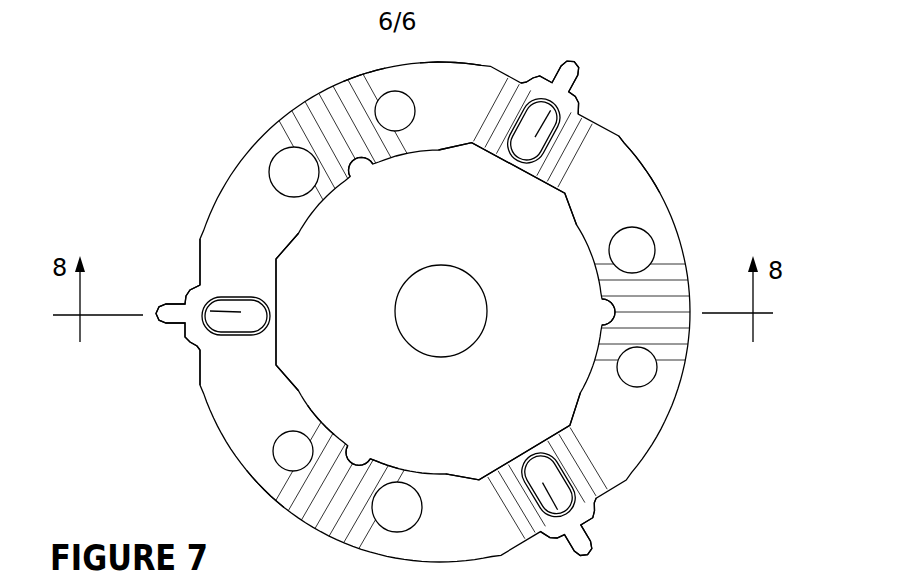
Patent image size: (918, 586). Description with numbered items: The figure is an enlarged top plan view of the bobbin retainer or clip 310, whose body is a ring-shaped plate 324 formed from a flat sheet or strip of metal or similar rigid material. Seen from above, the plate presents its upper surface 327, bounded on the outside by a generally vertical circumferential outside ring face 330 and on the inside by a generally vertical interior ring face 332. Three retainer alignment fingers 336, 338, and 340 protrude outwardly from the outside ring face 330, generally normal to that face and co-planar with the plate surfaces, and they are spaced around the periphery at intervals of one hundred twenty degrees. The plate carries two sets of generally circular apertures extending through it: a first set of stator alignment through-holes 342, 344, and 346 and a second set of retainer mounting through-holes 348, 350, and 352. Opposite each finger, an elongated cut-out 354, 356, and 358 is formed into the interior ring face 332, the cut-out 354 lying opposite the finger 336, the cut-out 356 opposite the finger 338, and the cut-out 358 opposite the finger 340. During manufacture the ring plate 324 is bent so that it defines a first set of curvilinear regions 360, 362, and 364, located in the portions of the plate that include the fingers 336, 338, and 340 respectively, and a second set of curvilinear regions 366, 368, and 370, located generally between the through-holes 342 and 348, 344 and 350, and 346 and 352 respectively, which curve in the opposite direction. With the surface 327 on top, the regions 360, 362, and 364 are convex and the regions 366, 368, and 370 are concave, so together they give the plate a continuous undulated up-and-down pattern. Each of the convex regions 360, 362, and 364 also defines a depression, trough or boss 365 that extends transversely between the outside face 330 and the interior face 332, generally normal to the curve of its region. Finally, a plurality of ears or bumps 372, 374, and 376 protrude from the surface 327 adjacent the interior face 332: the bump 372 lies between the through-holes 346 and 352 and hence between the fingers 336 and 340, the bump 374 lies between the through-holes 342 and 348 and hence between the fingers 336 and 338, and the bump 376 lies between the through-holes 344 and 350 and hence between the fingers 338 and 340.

The bobbin retainer 310 is at (676, 111).
The ring-shaped plate 324 is at (469, 52).
The upper surface 327 is at (632, 195).
The outside peripheral face 330 is at (268, 495).
The interior ring face 332 is at (327, 415).
The retainer alignment finger 336 is at (167, 323).
The retainer alignment finger 338 is at (578, 62).
The retainer alignment finger 340 is at (592, 543).
The stator alignment through-hole 342 is at (280, 150).
The stator alignment through-hole 344 is at (654, 238).
The stator alignment through-hole 346 is at (380, 531).
The retainer mounting through-hole 348 is at (365, 73).
The retainer mounting through-hole 350 is at (650, 385).
The retainer mounting through-hole 352 is at (273, 450).
The elongated cut-out 354 is at (278, 278).
The elongated cut-out 356 is at (522, 175).
The elongated cut-out 358 is at (520, 448).
The curvilinear region 360 is at (200, 252).
The curvilinear region 362 is at (588, 150).
The curvilinear region 364 is at (517, 525).
The boss 365 is at (528, 106).
The curvilinear region 366 is at (332, 130).
The curvilinear region 368 is at (638, 318).
The curvilinear region 370 is at (380, 463).
The bump 372 is at (366, 455).
The bump 374 is at (358, 170).
The bump 376 is at (600, 311).